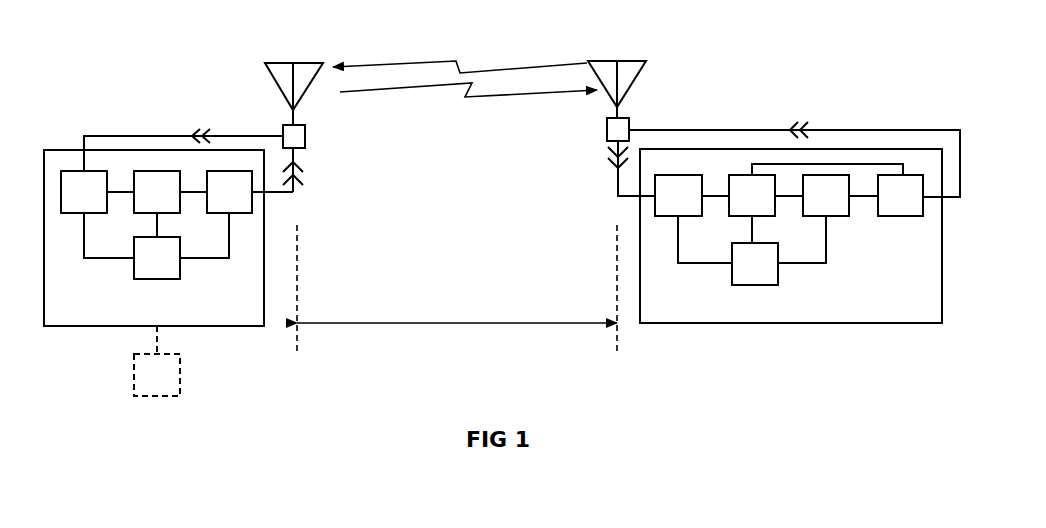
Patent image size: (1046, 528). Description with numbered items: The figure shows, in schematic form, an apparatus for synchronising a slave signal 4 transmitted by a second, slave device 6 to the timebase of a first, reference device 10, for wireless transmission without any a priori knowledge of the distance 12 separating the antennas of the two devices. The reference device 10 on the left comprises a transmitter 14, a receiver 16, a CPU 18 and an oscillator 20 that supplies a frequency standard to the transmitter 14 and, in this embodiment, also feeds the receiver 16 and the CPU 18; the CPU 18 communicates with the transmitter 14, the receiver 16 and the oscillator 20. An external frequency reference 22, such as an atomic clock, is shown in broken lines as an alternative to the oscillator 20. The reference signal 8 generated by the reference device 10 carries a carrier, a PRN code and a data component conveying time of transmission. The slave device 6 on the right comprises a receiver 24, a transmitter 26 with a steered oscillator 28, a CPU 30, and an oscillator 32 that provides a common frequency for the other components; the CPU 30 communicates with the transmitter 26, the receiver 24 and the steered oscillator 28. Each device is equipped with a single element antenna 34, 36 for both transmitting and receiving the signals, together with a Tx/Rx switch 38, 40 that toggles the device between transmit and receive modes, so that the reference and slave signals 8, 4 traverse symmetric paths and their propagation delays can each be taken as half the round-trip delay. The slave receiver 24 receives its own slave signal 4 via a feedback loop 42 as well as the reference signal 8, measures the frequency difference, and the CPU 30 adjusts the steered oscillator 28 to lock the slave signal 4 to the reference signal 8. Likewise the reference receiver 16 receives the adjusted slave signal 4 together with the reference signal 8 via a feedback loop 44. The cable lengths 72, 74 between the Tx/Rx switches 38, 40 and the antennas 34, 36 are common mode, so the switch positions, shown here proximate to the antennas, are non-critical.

The slave signal 4 is at (405, 62).
The slave device 6 is at (910, 323).
The reference signal 8 is at (466, 98).
The reference device 10 is at (232, 326).
The distance 12 is at (457, 291).
The transmitter 14 is at (229, 192).
The receiver 16 is at (84, 192).
The CPU 18 is at (157, 192).
The oscillator 20 is at (157, 258).
The external frequency reference 22 is at (157, 361).
The receiver 24 is at (678, 195).
The transmitter 26 is at (900, 195).
The steered oscillator 28 is at (826, 195).
The CPU 30 is at (752, 195).
The oscillator 32 is at (755, 264).
The antenna 34 is at (276, 62).
The antenna 36 is at (633, 60).
The Tx/Rx switch 38 is at (305, 135).
The Tx/Rx switch 40 is at (606, 130).
The feedback loop 42 is at (803, 126).
The feedback loop 44 is at (301, 169).
The cable length 72 is at (290, 112).
The cable length 74 is at (620, 110).